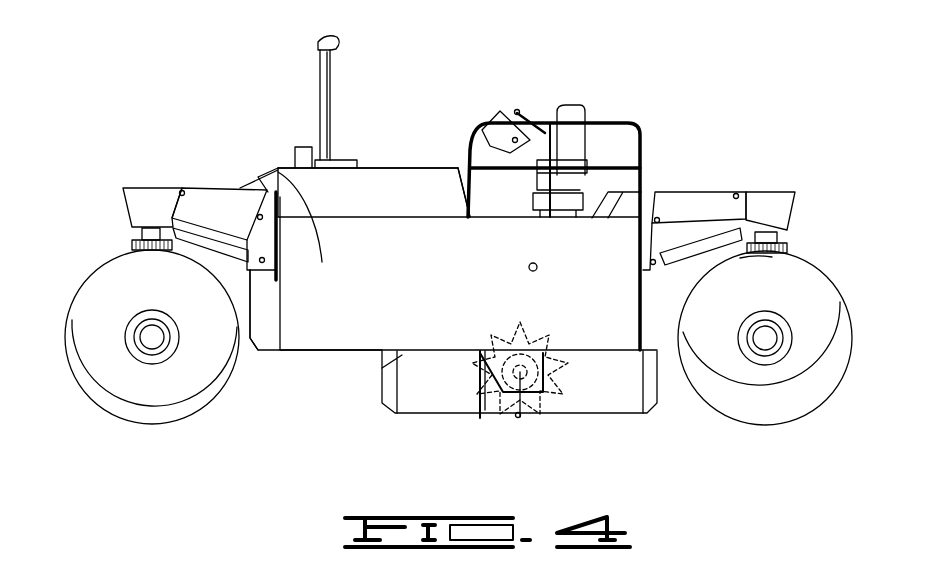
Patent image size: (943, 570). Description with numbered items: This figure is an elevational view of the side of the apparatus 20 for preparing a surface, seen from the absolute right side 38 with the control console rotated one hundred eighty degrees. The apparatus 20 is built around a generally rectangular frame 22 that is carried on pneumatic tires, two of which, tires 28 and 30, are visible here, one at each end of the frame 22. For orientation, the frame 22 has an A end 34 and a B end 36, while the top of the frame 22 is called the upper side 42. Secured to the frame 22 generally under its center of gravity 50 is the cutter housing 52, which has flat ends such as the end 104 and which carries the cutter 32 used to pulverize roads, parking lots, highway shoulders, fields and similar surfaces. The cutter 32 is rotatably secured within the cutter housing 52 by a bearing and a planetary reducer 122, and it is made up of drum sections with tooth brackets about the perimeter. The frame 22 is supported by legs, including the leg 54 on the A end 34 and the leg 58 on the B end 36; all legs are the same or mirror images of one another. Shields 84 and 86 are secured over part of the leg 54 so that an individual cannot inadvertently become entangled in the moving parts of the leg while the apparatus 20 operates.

The apparatus for preparing a surface 20 is at (470, 85).
The frame 22 is at (393, 165).
The pneumatic tire 28 is at (148, 410).
The pneumatic tire 30 is at (773, 410).
The cutter 32 is at (473, 430).
The A end of the frame 34 is at (640, 283).
The B end of the frame 36 is at (260, 282).
The absolute right side 38 is at (278, 172).
The upper side 42 is at (425, 185).
The center of gravity 50 is at (531, 264).
The cutter housing 52 is at (625, 405).
The leg 54 is at (803, 215).
The leg 58 is at (115, 215).
The shield 84 is at (703, 208).
The shield 86 is at (775, 200).
The flat end of cutter housing 104 is at (405, 397).
The planetary reducer 122 is at (520, 400).